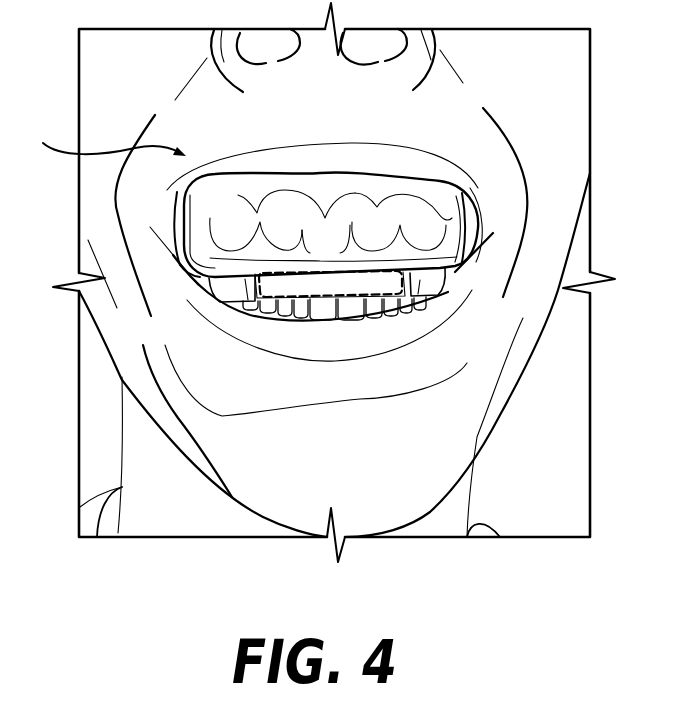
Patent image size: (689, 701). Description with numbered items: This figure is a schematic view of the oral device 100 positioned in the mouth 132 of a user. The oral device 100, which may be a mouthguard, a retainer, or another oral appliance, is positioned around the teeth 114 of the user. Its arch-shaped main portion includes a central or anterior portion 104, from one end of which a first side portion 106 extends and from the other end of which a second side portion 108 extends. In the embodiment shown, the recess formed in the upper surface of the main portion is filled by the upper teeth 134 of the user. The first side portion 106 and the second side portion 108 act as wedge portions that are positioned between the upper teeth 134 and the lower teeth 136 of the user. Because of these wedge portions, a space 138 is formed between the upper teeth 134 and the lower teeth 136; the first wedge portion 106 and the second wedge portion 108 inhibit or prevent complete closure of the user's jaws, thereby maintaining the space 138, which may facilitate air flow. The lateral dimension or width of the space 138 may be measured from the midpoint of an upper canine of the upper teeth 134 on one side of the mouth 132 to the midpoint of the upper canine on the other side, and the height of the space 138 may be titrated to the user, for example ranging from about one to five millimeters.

The oral device 100 is at (185, 227).
The central portion 104 is at (353, 210).
The first side portion 106 is at (213, 280).
The second side portion 108 is at (450, 278).
The teeth 114 is at (298, 238).
The upper teeth 134 is at (298, 238).
The lower teeth 136 is at (376, 312).
The space 138 is at (313, 272).
The mouth 132 is at (108, 136).